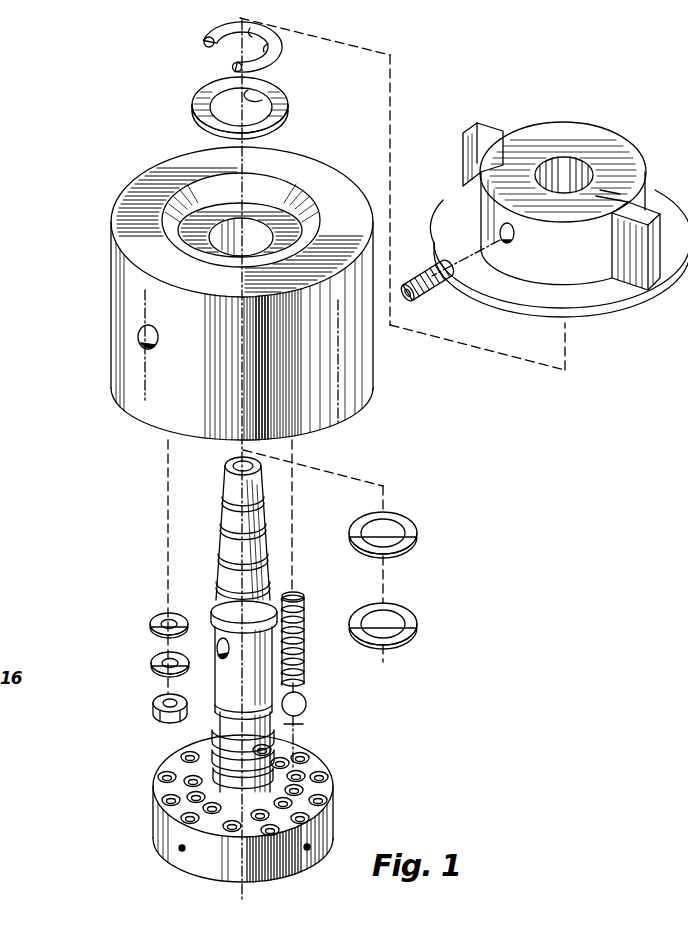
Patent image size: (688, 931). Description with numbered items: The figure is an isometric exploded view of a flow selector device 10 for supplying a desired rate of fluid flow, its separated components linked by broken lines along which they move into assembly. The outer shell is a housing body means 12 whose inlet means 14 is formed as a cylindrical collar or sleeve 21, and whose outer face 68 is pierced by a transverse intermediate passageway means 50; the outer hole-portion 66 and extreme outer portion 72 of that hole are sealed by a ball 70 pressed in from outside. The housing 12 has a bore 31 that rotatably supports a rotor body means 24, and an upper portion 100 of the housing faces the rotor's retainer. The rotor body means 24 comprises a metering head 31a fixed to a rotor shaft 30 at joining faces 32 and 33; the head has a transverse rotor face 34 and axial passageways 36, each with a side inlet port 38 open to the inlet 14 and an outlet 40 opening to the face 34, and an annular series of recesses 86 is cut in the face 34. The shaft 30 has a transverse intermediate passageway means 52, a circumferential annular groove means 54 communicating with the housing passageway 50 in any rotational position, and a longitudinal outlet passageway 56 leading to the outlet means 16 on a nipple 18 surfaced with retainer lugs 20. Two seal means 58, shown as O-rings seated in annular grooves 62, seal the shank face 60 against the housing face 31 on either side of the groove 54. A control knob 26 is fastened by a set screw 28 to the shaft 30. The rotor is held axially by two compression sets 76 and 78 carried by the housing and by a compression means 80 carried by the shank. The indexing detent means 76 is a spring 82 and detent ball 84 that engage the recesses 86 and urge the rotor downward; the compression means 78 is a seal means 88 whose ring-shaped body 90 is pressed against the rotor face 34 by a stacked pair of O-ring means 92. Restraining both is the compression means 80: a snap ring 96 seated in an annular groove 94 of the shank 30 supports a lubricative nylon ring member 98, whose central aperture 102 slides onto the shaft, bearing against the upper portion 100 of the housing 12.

The flow selector device 10 is at (420, 451).
The housing body means 12 is at (222, 293).
The inlet means 14 is at (277, 814).
The outlet means 16 is at (216, 464).
The nipple 18 is at (188, 636).
The retainer lugs 20 is at (226, 548).
The cylindrical collar or sleeve 21 is at (222, 293).
The rotor body means 24 is at (195, 694).
The control knob 26 is at (543, 218).
The set screw 28 is at (430, 292).
The rotor shaft 30 is at (210, 733).
The bore 31 is at (255, 233).
The metering head 31a is at (333, 806).
The joining face 32 is at (247, 810).
The joining face 33 is at (247, 800).
The rotor face 34 is at (313, 753).
The passageways 36 is at (290, 790).
The side inlet port 38 is at (181, 850).
The outlet 40 is at (292, 772).
The housing body means' intermediate passageway means 50 is at (84, 356).
The shank means' intermediate passageway means 52 is at (207, 760).
The annular groove means 54 is at (210, 787).
The longitudinally extending outlet passageway 56 is at (225, 466).
The seal means 58 is at (413, 533).
The adjacent face 60 is at (218, 700).
The annular groove 62 is at (226, 656).
The hole-portion 66 is at (84, 356).
The outer face 68 is at (222, 293).
The ball 70 is at (84, 352).
The extreme outer hole-portion 72 is at (84, 356).
The indexing detent means 76 is at (340, 654).
The compression means 78 is at (138, 658).
The compression means 80 is at (216, 80).
The spring 82 is at (307, 660).
The detent ball 84 is at (306, 703).
The recesses 86 is at (300, 796).
The seal means 88 is at (155, 635).
The ring-shaped body 90 is at (160, 695).
The O-ring means 92 is at (170, 614).
The annular groove 94 is at (303, 724).
The snap ring 96 is at (205, 42).
The lubricative ring member 98 is at (238, 108).
The upper portion 100 is at (282, 220).
The central aperture 102 is at (273, 99).